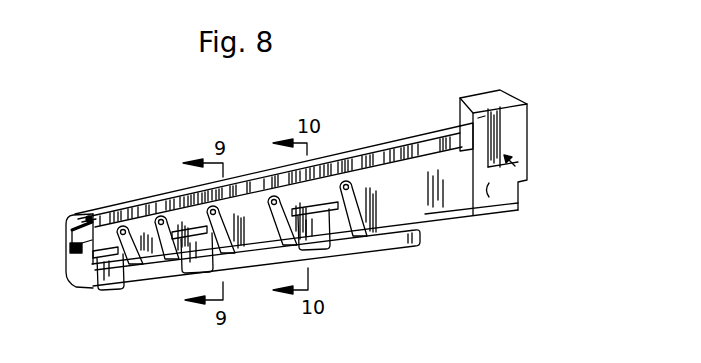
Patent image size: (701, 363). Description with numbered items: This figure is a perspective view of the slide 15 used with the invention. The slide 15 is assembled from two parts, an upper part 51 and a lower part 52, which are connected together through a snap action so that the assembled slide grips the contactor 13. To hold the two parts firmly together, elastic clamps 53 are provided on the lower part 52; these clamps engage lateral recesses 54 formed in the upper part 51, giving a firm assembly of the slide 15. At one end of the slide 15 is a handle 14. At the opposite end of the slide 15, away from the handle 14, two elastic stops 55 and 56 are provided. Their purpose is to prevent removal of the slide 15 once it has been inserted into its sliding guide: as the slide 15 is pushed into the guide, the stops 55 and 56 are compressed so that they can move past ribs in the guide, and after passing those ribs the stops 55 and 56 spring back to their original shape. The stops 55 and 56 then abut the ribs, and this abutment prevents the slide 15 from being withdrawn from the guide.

The contactor 13 is at (166, 238).
The handle 14 is at (517, 120).
The slide 15 is at (465, 241).
The upper part 51 is at (491, 196).
The lower part 52 is at (393, 237).
The elastic clamps 53 is at (91, 280).
The lateral recesses 54 is at (172, 222).
The elastic stop 55 is at (90, 220).
The elastic stop 56 is at (77, 274).